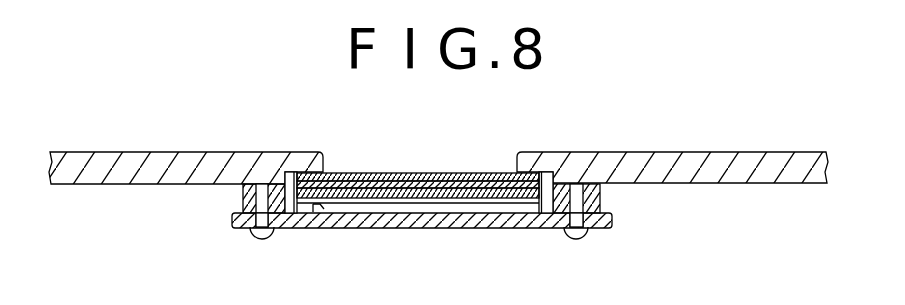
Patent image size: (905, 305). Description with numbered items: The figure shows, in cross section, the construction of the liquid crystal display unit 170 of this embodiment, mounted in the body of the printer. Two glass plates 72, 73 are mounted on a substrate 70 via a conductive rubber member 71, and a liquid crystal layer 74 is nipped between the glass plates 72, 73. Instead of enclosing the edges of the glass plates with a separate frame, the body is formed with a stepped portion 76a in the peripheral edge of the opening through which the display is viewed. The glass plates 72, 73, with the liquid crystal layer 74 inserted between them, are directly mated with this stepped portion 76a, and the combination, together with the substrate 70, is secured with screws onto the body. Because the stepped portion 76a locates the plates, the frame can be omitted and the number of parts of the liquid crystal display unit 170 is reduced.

The liquid crystal display unit 170 is at (396, 177).
The stepped portion 76a is at (295, 171).
The glass plate 72 is at (373, 173).
The liquid crystal layer 74 is at (423, 183).
The glass plate 73 is at (465, 189).
The conductive rubber member 71 is at (318, 207).
The substrate 70 is at (410, 228).